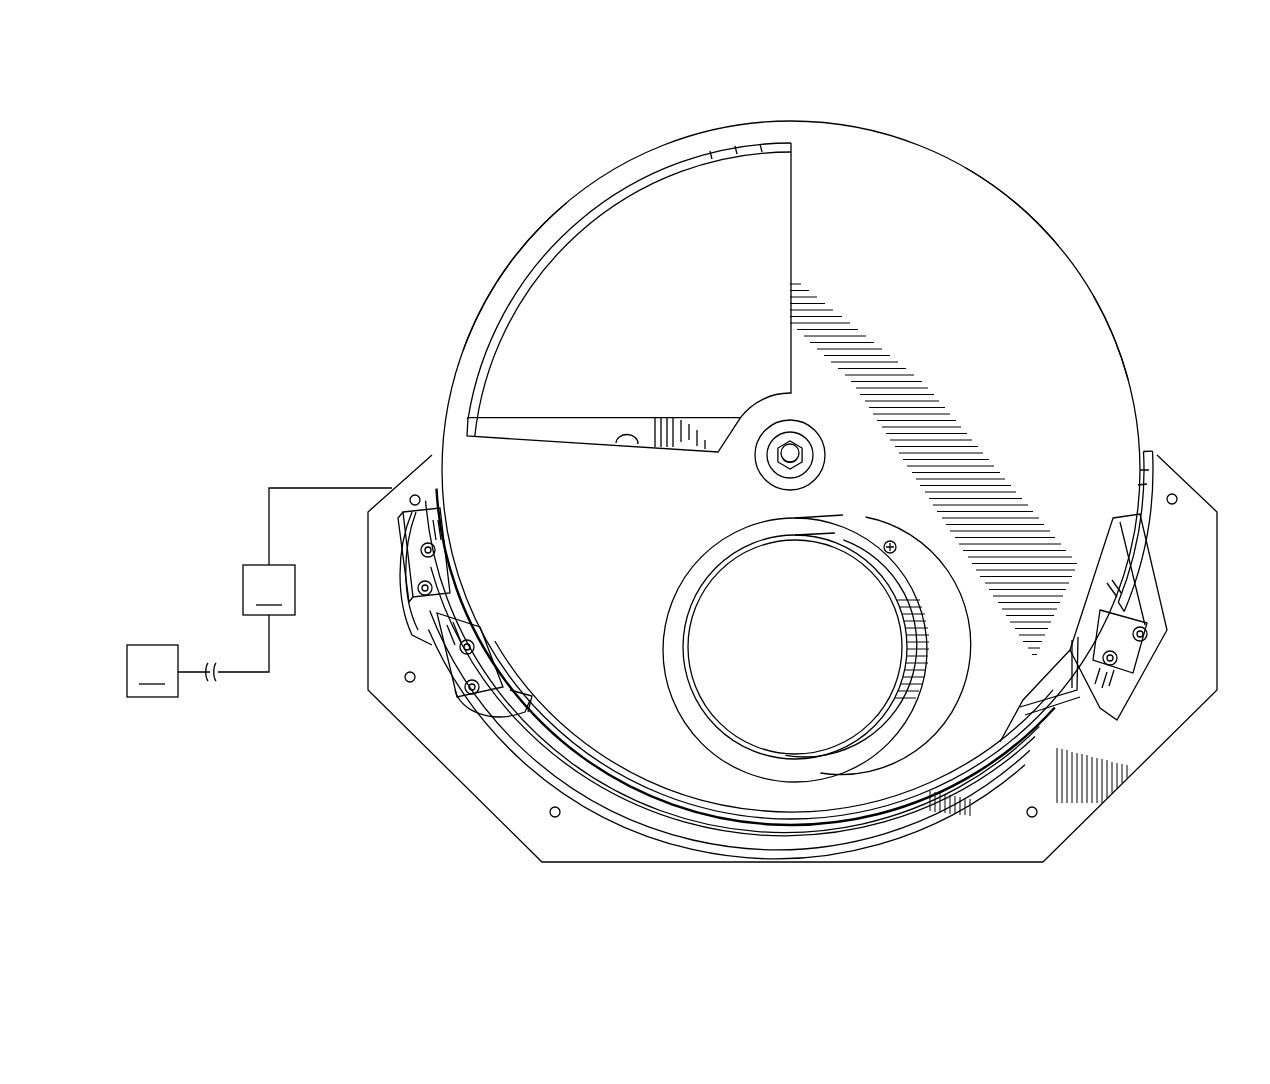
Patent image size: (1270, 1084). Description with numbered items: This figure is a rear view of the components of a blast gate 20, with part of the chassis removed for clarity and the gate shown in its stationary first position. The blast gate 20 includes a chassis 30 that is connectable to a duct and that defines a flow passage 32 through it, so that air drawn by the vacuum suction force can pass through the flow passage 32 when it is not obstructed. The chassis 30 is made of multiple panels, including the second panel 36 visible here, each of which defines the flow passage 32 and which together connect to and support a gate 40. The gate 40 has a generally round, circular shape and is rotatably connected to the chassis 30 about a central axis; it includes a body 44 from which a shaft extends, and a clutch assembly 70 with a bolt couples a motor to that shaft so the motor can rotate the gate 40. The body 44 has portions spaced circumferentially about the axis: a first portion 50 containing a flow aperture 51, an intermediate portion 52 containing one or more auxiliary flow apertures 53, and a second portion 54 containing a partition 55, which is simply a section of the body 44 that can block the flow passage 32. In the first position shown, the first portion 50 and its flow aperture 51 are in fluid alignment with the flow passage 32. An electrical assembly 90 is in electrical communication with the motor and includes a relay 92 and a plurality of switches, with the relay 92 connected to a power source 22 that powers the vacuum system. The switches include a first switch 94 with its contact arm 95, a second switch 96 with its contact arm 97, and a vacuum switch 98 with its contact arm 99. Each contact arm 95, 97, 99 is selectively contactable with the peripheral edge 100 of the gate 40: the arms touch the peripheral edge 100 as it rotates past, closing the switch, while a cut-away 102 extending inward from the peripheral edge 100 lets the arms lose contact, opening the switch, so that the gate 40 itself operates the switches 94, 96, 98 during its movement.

The blast gate 20 is at (1026, 127).
The power source 22 is at (152, 671).
The chassis 30 is at (1223, 566).
The flow passage 32 is at (713, 620).
The second panel 36 is at (1190, 512).
The gate 40 is at (1060, 312).
The body 44 is at (876, 157).
The first portion 50 is at (905, 768).
The flow aperture 51 is at (952, 570).
The intermediate portion 52 is at (555, 213).
The auxiliary flow aperture 53 is at (650, 193).
The second portion 54 is at (1104, 362).
The partition 55 is at (1042, 399).
The clutch assembly 70 is at (833, 465).
The electrical assembly 90 is at (300, 465).
The relay 92 is at (269, 590).
The first switch 94 is at (1123, 648).
The contact arm 95 is at (1142, 637).
The second switch 96 is at (412, 585).
The contact arm 97 is at (440, 625).
The vacuum switch 98 is at (470, 660).
The contact arm 99 is at (520, 705).
The peripheral edge 100 is at (1052, 232).
The cut-away 102 is at (1128, 540).